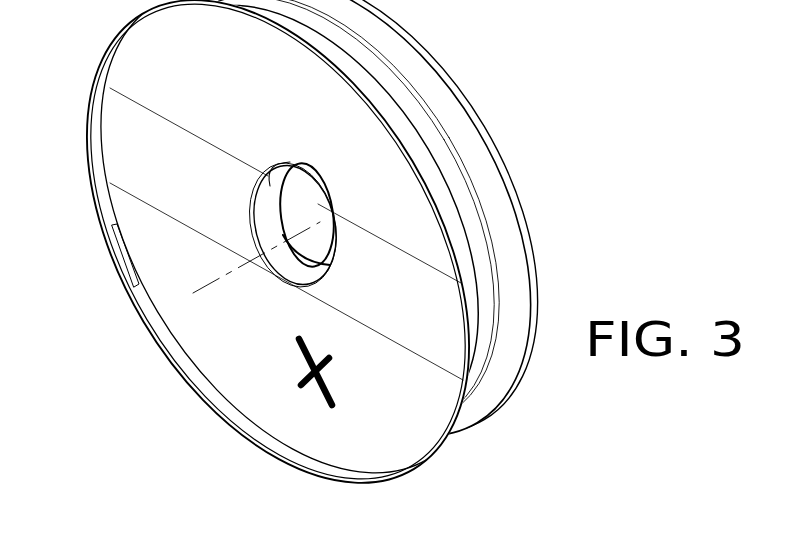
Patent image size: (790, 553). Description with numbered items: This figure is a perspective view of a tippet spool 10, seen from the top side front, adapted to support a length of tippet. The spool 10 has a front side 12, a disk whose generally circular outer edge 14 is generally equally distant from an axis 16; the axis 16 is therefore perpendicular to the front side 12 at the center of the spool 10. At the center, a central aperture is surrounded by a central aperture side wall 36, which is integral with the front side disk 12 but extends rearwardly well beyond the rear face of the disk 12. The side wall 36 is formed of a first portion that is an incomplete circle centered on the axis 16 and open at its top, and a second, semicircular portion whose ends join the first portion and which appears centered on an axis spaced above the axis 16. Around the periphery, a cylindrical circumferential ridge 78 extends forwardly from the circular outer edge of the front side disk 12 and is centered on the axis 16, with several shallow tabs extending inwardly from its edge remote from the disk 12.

The tippet spool 10 is at (548, 236).
The front side 12 is at (133, 80).
The circular outer edge 14 is at (163, 343).
The axis 16 is at (213, 280).
The central aperture side wall 36 is at (270, 215).
The circumferential ridge 78 is at (236, 424).